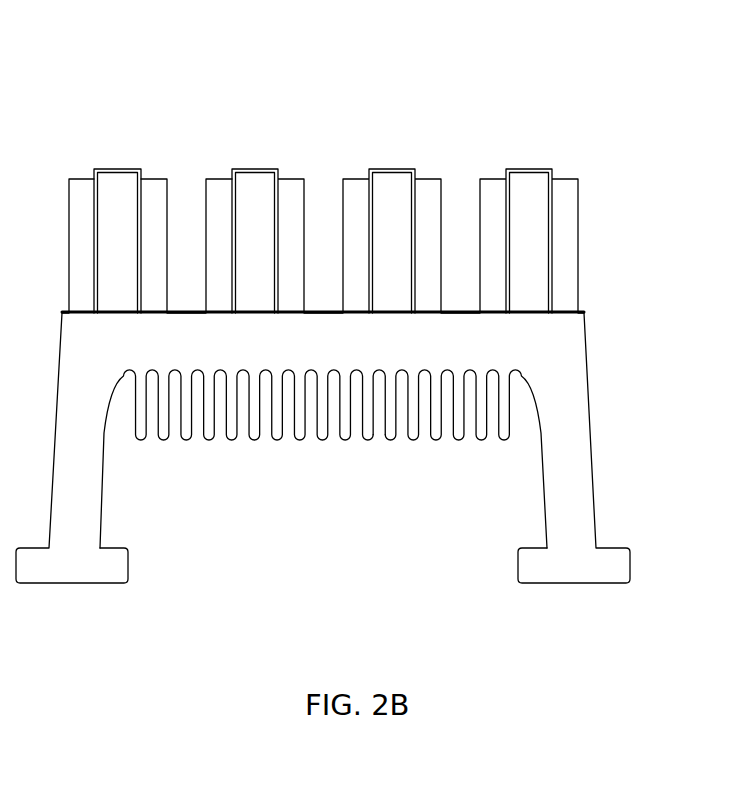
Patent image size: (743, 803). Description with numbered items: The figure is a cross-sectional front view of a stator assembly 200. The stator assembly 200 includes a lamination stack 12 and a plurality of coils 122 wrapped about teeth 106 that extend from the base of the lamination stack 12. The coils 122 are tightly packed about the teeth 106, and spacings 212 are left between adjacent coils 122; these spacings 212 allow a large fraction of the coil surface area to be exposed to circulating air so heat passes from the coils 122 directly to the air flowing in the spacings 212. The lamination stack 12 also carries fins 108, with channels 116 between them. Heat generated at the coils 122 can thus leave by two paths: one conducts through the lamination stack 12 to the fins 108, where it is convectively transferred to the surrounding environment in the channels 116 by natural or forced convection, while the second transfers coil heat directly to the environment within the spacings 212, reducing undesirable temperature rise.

The stator assembly 200 is at (636, 92).
The coils 122 is at (85, 197).
The teeth 106 is at (127, 168).
The spacings 212 is at (185, 218).
The fins 108 is at (295, 422).
The channels 116 is at (384, 439).
The lamination stack 12 is at (583, 607).